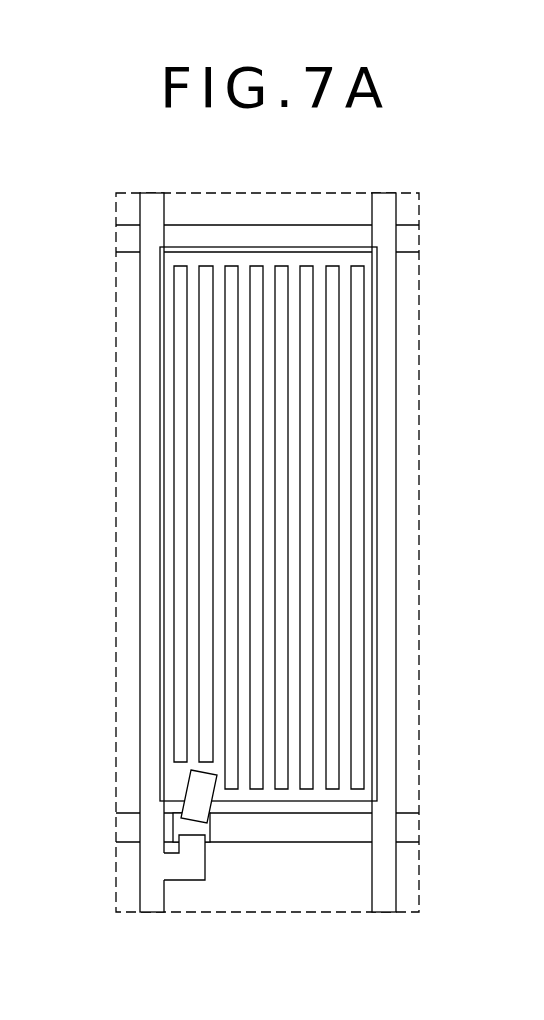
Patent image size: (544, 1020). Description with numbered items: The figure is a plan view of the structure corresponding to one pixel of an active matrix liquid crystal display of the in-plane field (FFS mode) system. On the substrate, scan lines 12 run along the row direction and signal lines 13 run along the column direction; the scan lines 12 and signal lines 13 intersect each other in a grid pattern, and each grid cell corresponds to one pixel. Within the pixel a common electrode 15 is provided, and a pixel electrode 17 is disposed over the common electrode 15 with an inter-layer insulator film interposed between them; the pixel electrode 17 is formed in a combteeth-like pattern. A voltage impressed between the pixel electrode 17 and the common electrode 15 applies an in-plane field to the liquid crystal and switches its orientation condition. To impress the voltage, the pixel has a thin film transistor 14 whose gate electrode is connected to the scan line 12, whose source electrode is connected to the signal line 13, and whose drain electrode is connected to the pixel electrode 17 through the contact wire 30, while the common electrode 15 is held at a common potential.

The scan line 12 is at (413, 243).
The signal line 13 is at (149, 643).
The thin film transistor 14 is at (206, 828).
The common electrode 15 is at (419, 405).
The pixel electrode 17 is at (373, 586).
The contact wire 30 is at (187, 790).